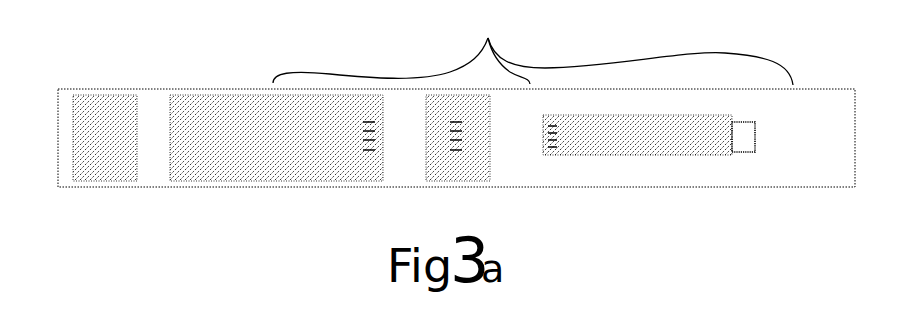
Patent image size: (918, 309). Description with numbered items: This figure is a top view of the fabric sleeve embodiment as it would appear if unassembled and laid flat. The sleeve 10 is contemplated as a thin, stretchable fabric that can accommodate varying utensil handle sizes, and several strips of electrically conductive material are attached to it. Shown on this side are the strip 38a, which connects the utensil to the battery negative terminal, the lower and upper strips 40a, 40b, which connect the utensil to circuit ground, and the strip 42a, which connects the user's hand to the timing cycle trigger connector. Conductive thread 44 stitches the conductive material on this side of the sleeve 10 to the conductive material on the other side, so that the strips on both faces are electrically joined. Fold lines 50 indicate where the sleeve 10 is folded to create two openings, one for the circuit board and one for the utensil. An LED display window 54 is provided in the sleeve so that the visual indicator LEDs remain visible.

The sleeve base material 10 is at (63, 139).
The conductive material to connect utensil to battery negative terminal (utensil sid 38a is at (308, 162).
The conductive material to connect utensil to circuit ground (lower utensil side) 40a is at (118, 168).
The conductive material to connect utensil to circuit ground (upper utensil side) 40b is at (440, 157).
The conductive material to connect user's hand to timing cycle trigger connector (ha 42a is at (613, 140).
The conductive thread 44 is at (369, 152).
The folds in sleeve base material 50 is at (533, 51).
The LED display window 54 is at (745, 140).